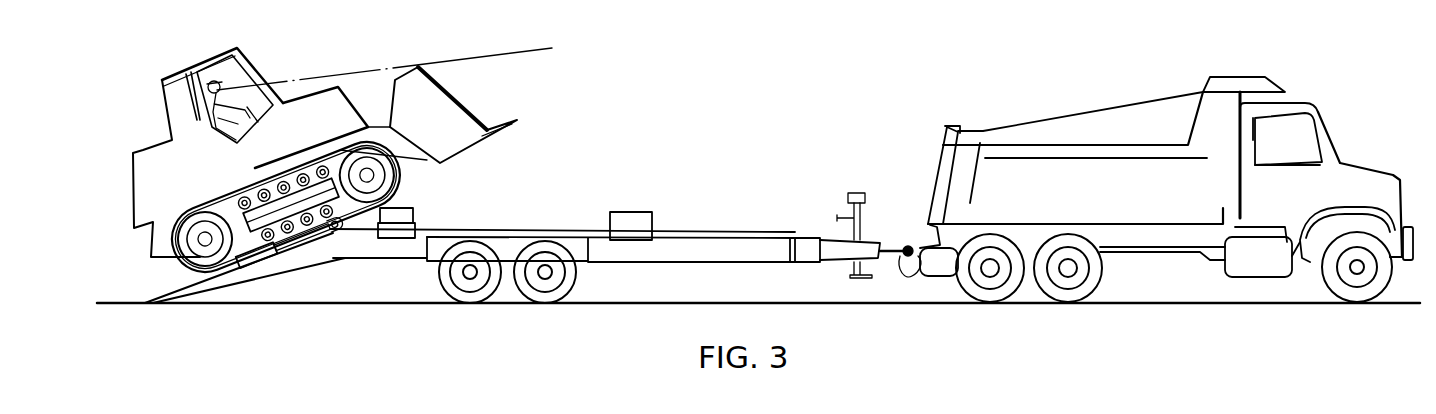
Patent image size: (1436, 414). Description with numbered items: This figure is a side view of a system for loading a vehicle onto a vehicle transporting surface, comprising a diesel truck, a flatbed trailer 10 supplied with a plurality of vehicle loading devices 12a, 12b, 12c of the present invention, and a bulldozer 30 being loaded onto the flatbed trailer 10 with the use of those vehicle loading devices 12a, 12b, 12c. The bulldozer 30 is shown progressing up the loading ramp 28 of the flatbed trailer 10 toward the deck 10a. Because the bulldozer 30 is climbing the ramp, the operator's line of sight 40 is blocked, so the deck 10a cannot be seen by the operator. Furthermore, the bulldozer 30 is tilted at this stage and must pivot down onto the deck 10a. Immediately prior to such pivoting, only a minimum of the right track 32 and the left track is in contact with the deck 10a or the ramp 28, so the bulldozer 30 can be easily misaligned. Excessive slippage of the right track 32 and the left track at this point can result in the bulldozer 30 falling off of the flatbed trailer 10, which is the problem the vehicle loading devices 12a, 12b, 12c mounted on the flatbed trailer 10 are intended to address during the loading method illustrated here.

The flatbed trailer 10 is at (748, 250).
The deck 10a is at (752, 230).
The vehicle loading device 12a is at (637, 232).
The vehicle loading device 12b is at (402, 230).
The vehicle loading device 12c is at (274, 252).
The loading ramp 28 is at (215, 277).
The bulldozer 30 is at (305, 173).
The right track 32 is at (228, 200).
The operator's line of sight 40 is at (475, 55).